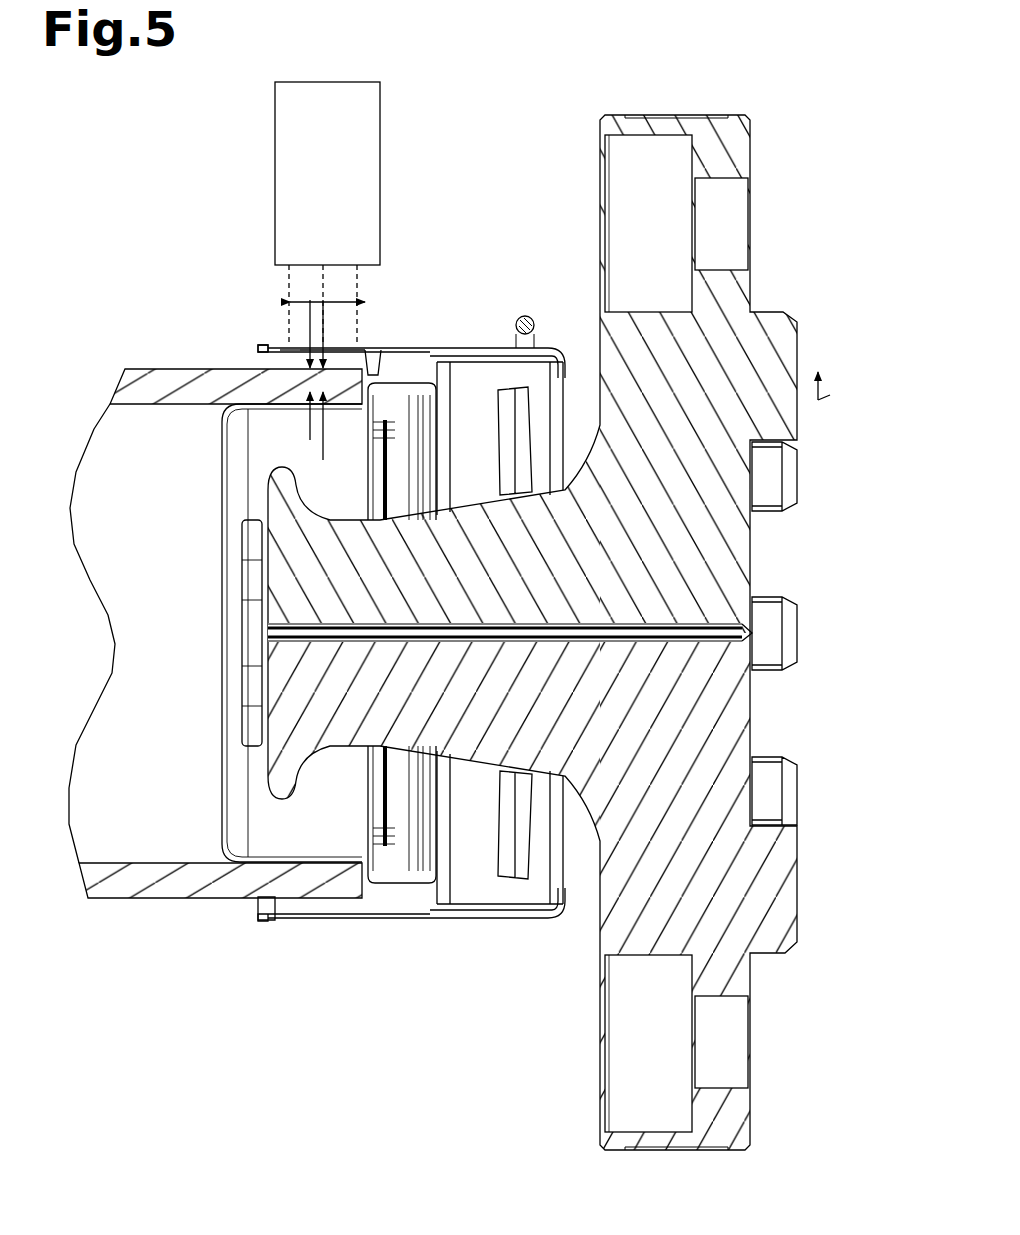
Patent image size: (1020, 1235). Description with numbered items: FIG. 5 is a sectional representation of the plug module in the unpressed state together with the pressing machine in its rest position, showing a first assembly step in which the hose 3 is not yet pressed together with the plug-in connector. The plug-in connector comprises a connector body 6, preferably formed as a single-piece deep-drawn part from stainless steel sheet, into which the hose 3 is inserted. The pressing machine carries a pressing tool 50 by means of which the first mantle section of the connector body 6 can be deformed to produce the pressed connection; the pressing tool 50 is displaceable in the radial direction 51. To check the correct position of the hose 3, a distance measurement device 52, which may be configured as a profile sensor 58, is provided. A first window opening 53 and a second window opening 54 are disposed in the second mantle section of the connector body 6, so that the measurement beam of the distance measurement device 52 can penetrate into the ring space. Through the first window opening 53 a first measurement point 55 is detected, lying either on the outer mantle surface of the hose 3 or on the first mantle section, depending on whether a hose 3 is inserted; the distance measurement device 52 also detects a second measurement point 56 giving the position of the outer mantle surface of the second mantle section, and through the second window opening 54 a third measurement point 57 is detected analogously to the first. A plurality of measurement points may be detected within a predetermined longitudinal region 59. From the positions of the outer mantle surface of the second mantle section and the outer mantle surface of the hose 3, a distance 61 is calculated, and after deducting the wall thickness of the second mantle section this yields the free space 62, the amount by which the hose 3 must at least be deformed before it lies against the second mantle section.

The hose 3 is at (150, 379).
The connector body 6 is at (472, 342).
The pressing tool 50 is at (735, 128).
The radial direction 51 is at (818, 398).
The distance measurement device 52 is at (375, 130).
The first window opening 53 is at (280, 340).
The second window opening 54 is at (378, 330).
The first measurement point 55 is at (258, 347).
The encoder strip 56 is at (338, 350).
The third measurement point 57 is at (447, 348).
The profile sensor 58 is at (384, 178).
The longitudinal region 59 is at (330, 300).
The distance 61 is at (325, 458).
The free space 62 is at (312, 432).